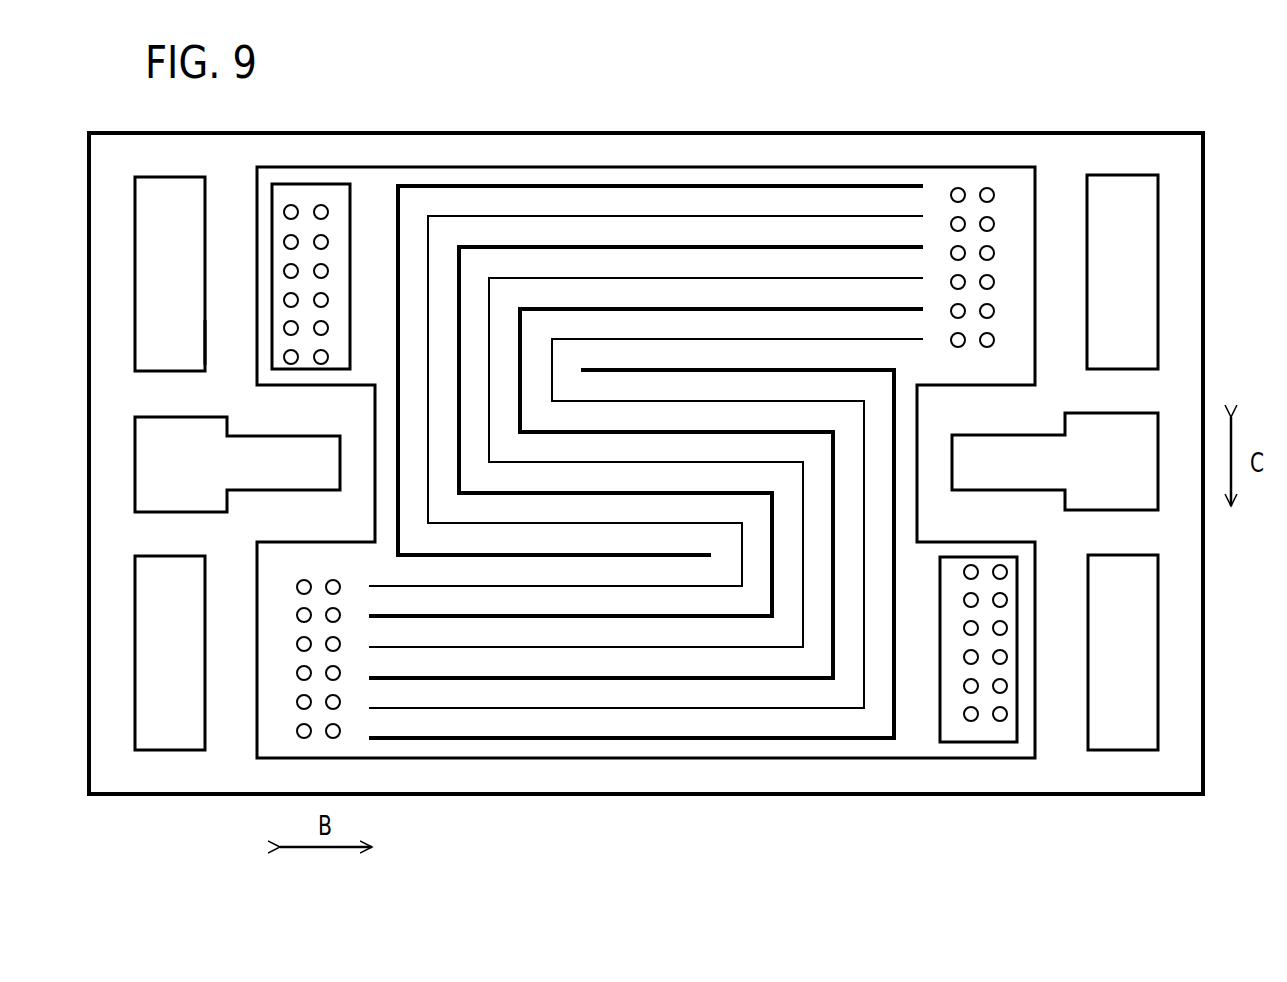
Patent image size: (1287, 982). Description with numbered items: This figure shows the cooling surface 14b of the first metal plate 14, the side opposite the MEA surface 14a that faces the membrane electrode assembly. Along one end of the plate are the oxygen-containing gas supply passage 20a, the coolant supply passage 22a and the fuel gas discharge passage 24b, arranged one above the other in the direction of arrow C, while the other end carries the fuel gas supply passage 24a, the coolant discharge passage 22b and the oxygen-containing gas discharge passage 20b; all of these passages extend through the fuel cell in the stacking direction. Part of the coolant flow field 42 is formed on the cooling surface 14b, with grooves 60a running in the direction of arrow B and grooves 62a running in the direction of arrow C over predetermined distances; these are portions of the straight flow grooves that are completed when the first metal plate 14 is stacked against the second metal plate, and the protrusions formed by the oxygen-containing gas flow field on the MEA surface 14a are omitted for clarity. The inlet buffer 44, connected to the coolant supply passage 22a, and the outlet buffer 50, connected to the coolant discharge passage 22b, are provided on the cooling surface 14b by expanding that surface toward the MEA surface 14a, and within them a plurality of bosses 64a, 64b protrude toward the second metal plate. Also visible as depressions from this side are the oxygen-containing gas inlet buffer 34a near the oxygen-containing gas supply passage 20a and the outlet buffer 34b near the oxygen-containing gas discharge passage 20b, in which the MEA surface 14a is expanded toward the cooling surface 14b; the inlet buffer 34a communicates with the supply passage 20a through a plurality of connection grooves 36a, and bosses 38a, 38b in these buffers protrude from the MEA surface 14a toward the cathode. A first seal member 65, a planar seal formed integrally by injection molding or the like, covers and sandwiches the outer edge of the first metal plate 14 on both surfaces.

The first metal plate 14 is at (845, 90).
The MEA surface 14a is at (862, 780).
The cooling surface 14b is at (585, 780).
The first seal member 65 is at (842, 150).
The coolant flow field 42 is at (645, 212).
The grooves 60a is at (577, 247).
The grooves 62a is at (400, 515).
The outlet buffer 50 is at (305, 196).
The inlet buffer 44 is at (985, 726).
The bosses 64b is at (284, 242).
The bosses 64a is at (1007, 686).
The fuel gas supply passage 24a is at (170, 274).
The fuel gas discharge passage 24b is at (1123, 652).
The oxygen-containing gas supply passage 20a is at (1122, 272).
The oxygen-containing gas discharge passage 20b is at (170, 653).
The coolant supply passage 22a is at (1055, 461).
The coolant discharge passage 22b is at (237, 464).
The inlet buffer 34a is at (1020, 342).
The outlet buffer 34b is at (270, 585).
The connection grooves 36a is at (232, 342).
The bosses 38a is at (994, 225).
The bosses 38b is at (297, 702).